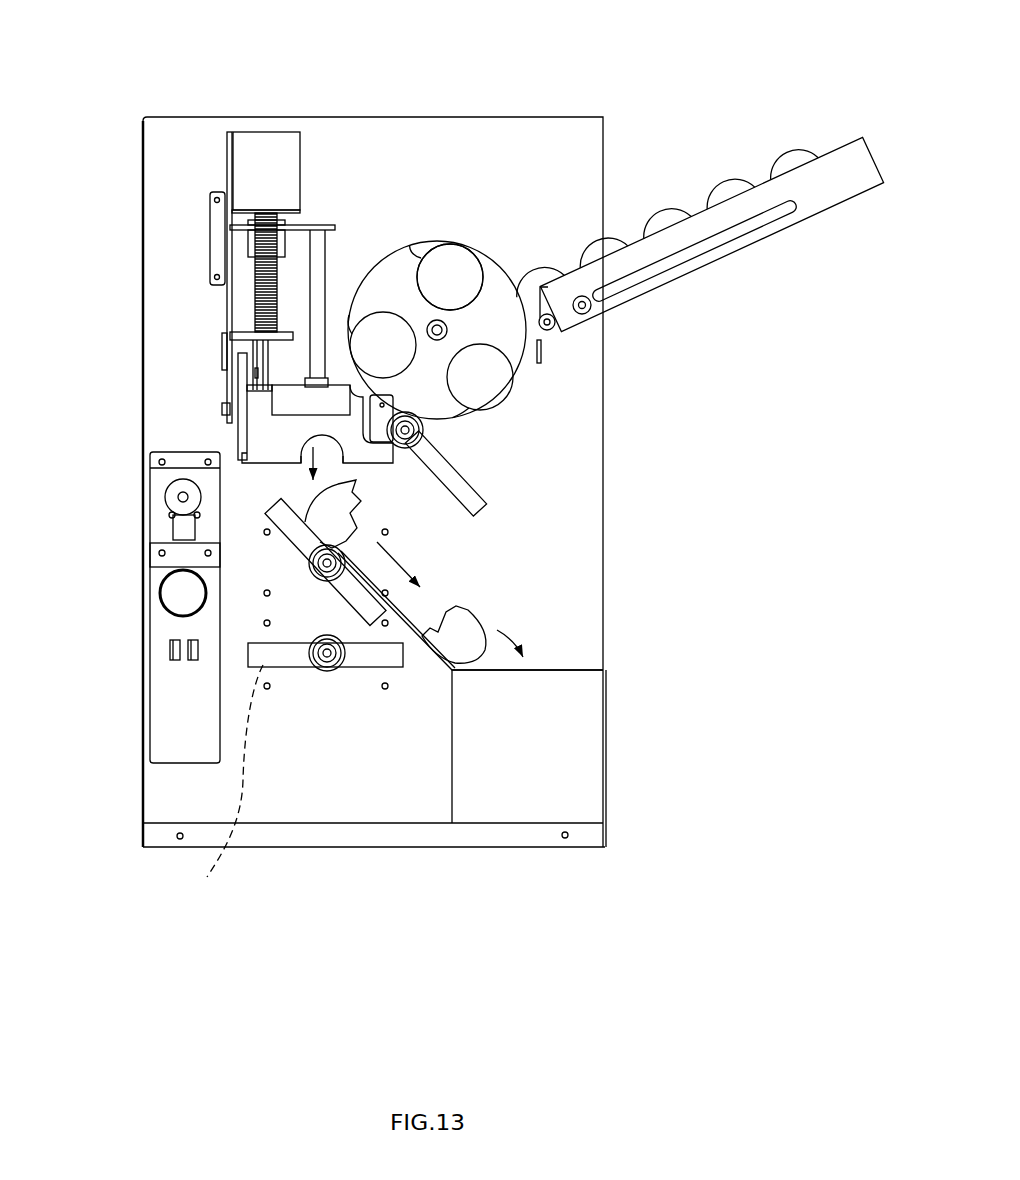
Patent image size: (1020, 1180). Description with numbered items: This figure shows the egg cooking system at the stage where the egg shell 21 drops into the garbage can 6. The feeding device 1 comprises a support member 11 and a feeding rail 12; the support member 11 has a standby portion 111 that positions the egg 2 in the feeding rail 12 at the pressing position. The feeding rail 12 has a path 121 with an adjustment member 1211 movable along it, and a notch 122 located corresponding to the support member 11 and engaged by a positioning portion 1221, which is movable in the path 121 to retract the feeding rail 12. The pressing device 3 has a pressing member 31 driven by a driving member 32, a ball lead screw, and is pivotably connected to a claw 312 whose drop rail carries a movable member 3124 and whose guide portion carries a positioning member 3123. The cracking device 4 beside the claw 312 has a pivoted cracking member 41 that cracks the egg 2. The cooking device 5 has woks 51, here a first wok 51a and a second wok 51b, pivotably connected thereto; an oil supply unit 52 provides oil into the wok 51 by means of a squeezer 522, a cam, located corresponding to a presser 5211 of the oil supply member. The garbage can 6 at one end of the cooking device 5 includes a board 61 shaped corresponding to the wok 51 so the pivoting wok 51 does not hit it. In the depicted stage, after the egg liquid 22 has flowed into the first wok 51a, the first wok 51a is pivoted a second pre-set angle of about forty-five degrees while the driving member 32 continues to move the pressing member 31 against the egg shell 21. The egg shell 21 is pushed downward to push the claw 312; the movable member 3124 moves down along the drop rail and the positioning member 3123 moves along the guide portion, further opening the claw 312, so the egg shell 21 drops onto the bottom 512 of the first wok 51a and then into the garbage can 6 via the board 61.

The feeding device 1 is at (374, 456).
The egg 2 is at (448, 262).
The pressing device 3 is at (213, 239).
The cracking device 4 is at (517, 410).
The cooking device 5 is at (430, 731).
The garbage can 6 is at (607, 758).
The support member 11 is at (437, 221).
The feeding rail 12 is at (726, 248).
The egg shell 21 is at (477, 620).
The egg liquid 22 is at (220, 785).
The pressing member 31 is at (318, 382).
The driving member 32 is at (253, 243).
The cracking member 41 is at (487, 507).
The wok 51 is at (430, 731).
The first wok 51a is at (412, 625).
The second wok 51b is at (362, 668).
The oil supply unit 52 is at (119, 607).
The board 61 is at (412, 625).
The standby portion 111 is at (425, 254).
The path 121 is at (743, 220).
The notch 122 is at (553, 343).
The claw 312 is at (348, 424).
The bottom 512 is at (288, 512).
The squeezer 522 is at (167, 497).
The adjustment member 1211 is at (582, 296).
The positioning portion 1221 is at (547, 314).
The positioning member 3123 is at (223, 406).
The movable member 3124 is at (233, 357).
The presser 5211 is at (173, 530).